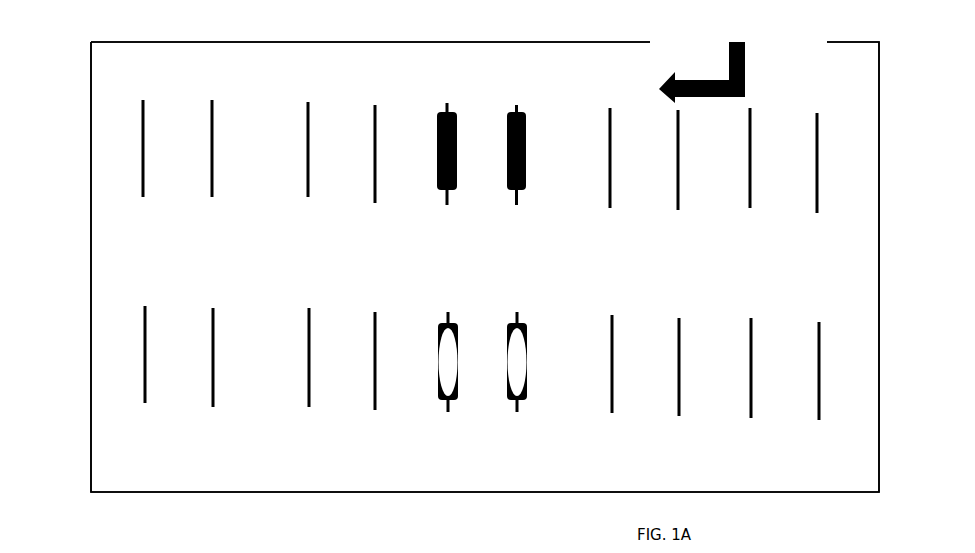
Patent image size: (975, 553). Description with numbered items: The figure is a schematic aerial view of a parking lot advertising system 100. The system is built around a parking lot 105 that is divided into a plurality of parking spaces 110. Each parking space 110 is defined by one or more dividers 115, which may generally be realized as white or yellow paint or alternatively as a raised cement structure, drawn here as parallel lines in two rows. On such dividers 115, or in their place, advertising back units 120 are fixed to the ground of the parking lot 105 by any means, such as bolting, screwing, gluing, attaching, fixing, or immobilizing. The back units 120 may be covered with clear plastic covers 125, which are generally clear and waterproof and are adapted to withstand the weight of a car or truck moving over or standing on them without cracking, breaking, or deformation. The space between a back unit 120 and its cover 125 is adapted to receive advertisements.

The parking lot advertising system 100 is at (76, 505).
The parking lot 105 is at (162, 63).
The parking space 110 is at (176, 160).
The divider 115 is at (375, 97).
The advertising back unit 120 is at (530, 134).
The clear plastic cover 125 is at (518, 357).